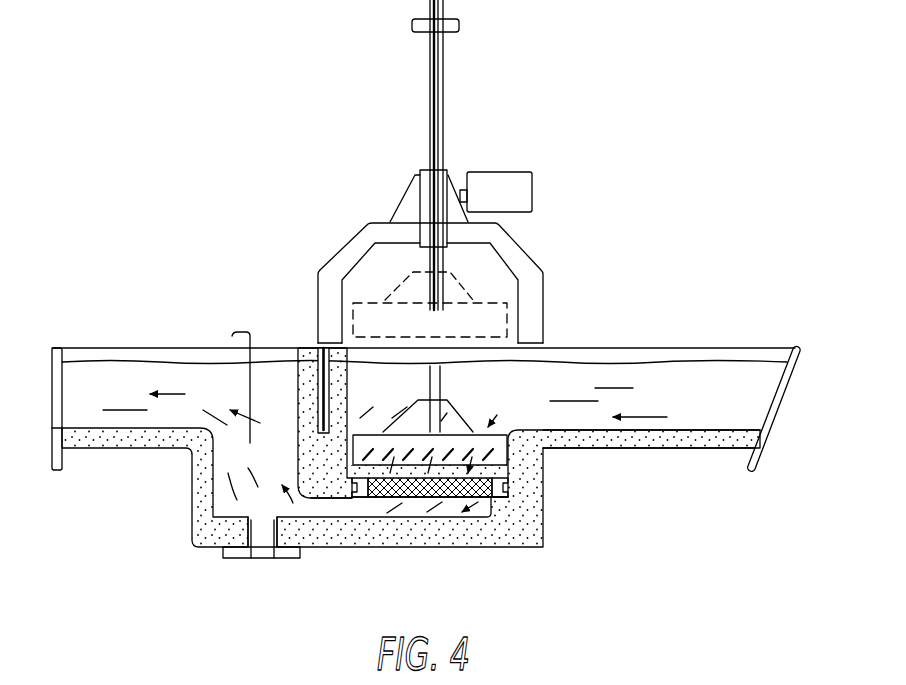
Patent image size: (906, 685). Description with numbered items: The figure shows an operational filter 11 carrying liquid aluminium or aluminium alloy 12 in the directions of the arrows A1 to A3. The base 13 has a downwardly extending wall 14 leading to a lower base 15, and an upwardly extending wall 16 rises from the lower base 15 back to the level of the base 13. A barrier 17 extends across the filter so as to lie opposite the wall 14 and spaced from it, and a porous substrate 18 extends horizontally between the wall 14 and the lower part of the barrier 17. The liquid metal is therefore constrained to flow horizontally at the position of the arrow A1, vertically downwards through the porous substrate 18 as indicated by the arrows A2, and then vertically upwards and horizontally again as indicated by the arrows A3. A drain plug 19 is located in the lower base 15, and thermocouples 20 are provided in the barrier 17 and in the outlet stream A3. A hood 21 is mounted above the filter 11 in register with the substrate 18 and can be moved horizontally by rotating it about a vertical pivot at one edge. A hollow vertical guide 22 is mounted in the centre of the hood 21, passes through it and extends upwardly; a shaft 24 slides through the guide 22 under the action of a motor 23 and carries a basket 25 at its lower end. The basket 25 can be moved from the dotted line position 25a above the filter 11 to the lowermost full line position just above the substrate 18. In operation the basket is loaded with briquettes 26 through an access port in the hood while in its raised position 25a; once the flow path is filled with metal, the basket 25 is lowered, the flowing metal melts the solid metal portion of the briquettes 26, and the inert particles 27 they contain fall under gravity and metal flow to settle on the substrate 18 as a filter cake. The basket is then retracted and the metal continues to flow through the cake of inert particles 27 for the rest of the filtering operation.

The filter 11 is at (673, 348).
The liquid aluminium or aluminium alloy 12 is at (747, 400).
The base 13 is at (713, 440).
The downwardly extending wall 14 is at (533, 515).
The lower base 15 is at (480, 535).
The upwardly extending wall 16 is at (200, 492).
The barrier 17 is at (303, 410).
The porous substrate 18 is at (378, 498).
The drain plug 19 is at (262, 548).
The thermocouples 20 is at (313, 357).
The hood 21 is at (340, 268).
The vertical guide 22 is at (442, 107).
The motor 23 is at (523, 202).
The shaft 24 is at (433, 69).
The basket 25 is at (368, 432).
The dotted line position 25a is at (507, 318).
The briquettes 26 is at (477, 450).
The inert particles 27 is at (377, 472).
The arrow A1 is at (642, 407).
The arrows A2 is at (488, 427).
The arrows A3 is at (165, 393).